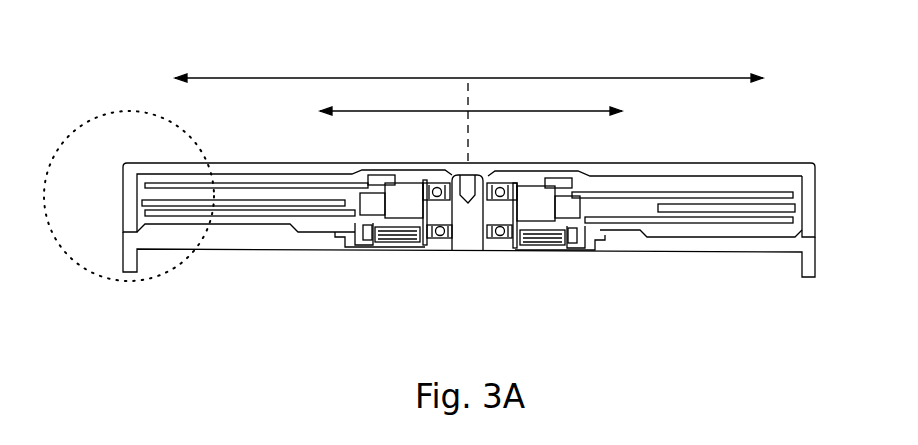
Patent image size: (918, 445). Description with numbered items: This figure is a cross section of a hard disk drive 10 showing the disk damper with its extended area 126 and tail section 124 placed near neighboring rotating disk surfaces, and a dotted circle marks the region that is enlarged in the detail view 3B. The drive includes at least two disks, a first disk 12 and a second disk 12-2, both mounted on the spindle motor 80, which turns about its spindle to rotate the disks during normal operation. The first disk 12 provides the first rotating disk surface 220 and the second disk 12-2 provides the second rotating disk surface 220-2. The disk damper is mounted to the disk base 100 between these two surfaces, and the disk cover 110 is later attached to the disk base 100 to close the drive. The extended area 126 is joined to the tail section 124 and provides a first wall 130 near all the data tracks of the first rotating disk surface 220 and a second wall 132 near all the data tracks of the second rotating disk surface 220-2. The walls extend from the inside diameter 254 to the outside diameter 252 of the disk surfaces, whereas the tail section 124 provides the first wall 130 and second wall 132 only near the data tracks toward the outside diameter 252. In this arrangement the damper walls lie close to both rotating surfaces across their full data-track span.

The detail circle (FIG. 3B region) 3B is at (68, 130).
The hard disk drive 10 is at (820, 308).
The first disk 12 is at (272, 174).
The second disk 12-2 is at (802, 219).
The spindle motor 80 is at (555, 260).
The disk base 100 is at (214, 250).
The disk cover 110 is at (730, 163).
The tail section 124 is at (797, 209).
The extended area 126 is at (146, 203).
The first wall 130 is at (172, 186).
The second wall 132 is at (174, 212).
The first rotating disk surface 220 is at (340, 190).
The second rotating disk surface 220-2 is at (337, 213).
The outside diameter 252 is at (368, 78).
The inside diameter 254 is at (453, 112).